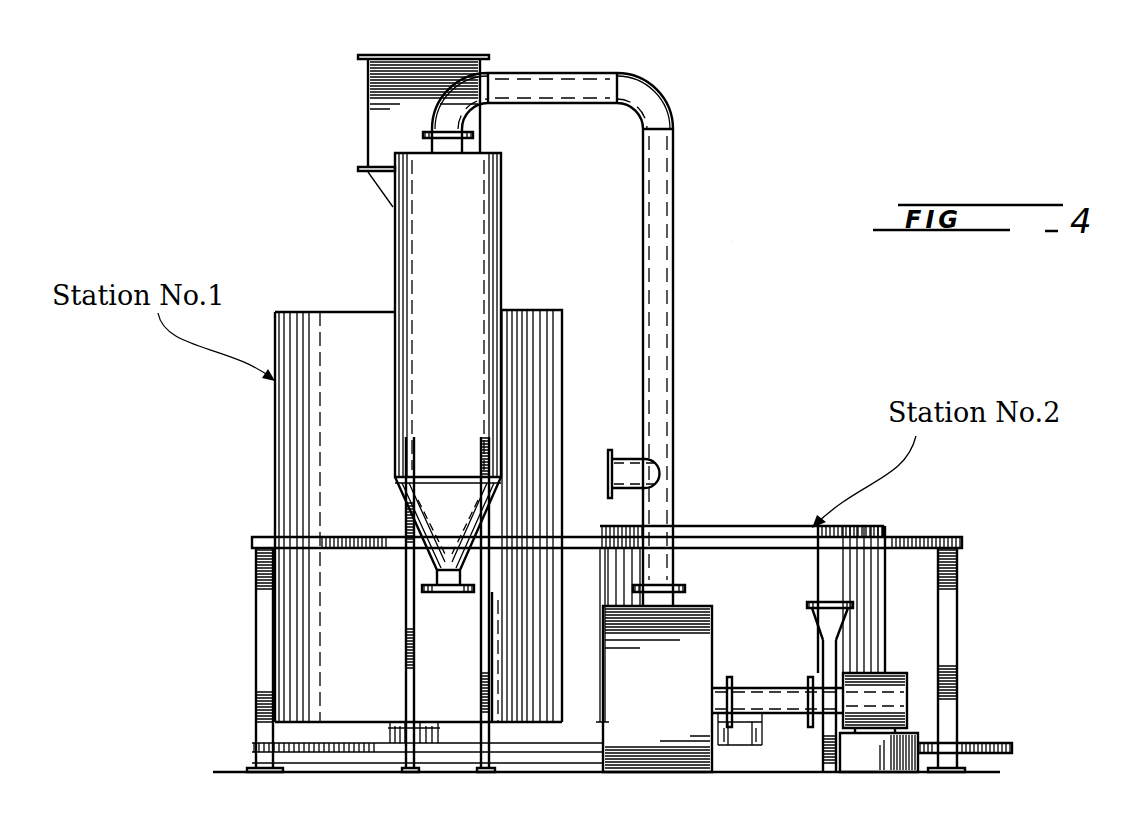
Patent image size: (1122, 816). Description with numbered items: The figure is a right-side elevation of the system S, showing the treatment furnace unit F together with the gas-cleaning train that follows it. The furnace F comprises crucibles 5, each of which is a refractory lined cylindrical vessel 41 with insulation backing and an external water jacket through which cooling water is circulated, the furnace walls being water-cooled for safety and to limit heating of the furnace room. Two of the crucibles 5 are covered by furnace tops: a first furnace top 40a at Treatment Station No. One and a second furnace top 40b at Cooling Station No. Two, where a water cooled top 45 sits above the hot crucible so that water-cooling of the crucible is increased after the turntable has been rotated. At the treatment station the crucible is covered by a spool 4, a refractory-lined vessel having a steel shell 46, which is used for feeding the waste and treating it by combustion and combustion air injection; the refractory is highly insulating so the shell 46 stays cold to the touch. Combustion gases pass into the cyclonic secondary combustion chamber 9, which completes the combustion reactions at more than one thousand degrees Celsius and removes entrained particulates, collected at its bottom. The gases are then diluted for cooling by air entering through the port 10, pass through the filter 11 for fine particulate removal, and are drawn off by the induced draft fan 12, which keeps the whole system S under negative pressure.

The spool 4 is at (306, 312).
The first furnace top 40a is at (275, 453).
The second furnace top 40b is at (880, 527).
The crucible 5 is at (312, 580).
The cyclonic secondary combustion chamber 9 is at (478, 212).
The port 10 is at (628, 468).
The filter 11 is at (678, 633).
The induced draft fan 12 is at (902, 748).
The refractory lined cylindrical vessel 41 is at (345, 682).
The water cooled top 45 is at (702, 532).
The steel shell 46 is at (565, 326).
The system S is at (734, 240).
The treatment furnace F is at (254, 675).